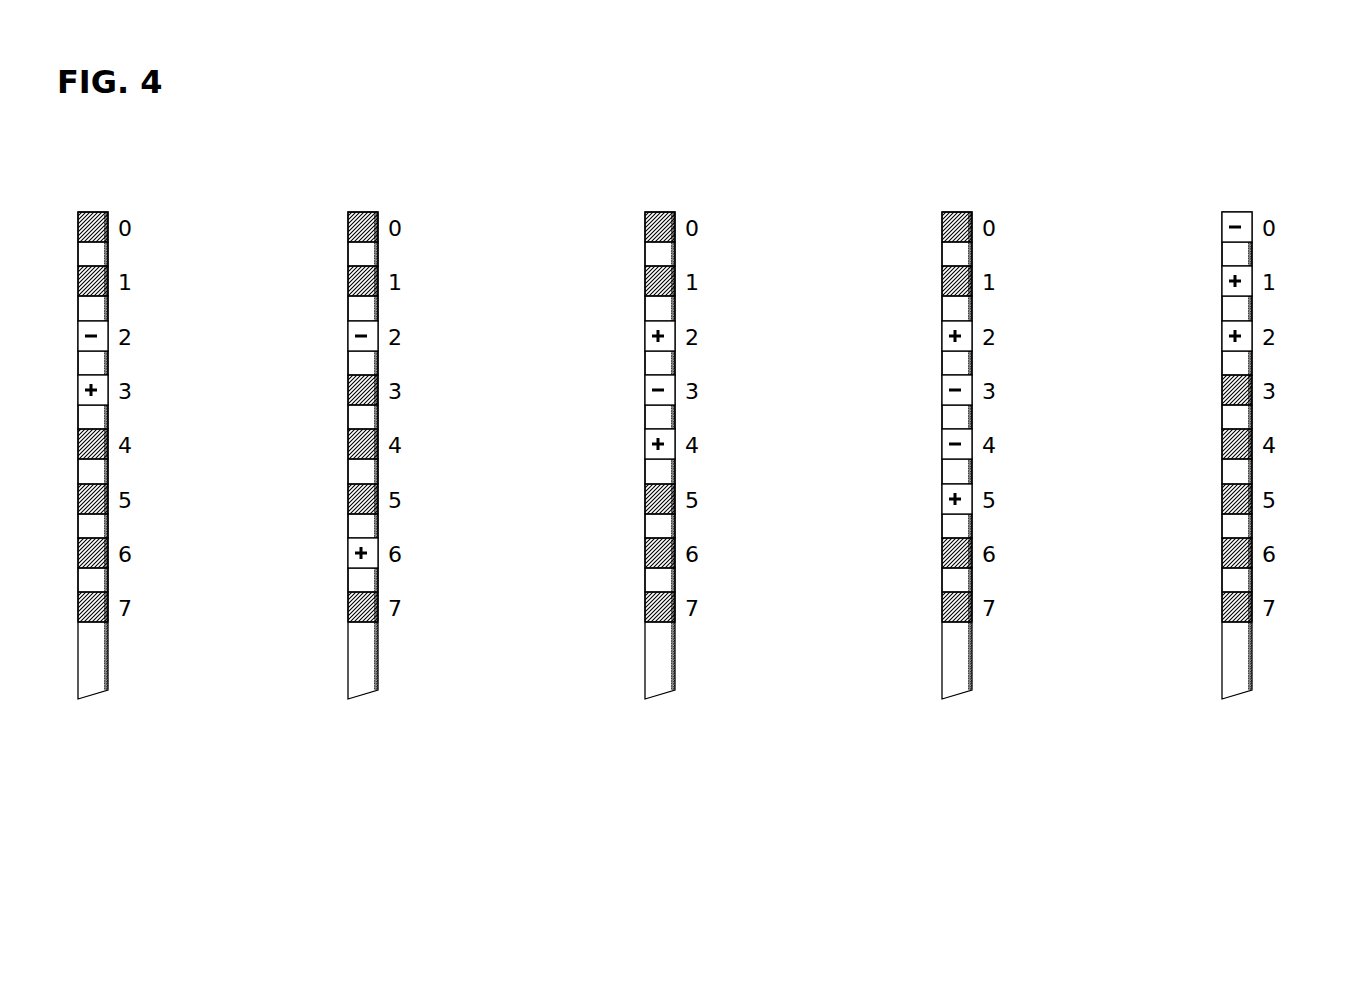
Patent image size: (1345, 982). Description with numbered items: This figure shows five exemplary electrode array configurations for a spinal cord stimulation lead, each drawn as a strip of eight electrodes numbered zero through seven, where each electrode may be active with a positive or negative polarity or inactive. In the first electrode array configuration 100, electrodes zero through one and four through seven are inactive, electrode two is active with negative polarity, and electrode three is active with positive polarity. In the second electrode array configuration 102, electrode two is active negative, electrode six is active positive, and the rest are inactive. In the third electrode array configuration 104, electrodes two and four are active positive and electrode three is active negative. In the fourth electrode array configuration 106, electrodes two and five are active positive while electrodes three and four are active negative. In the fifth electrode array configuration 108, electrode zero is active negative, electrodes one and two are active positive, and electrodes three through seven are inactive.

The first electrode array configuration 100 is at (176, 204).
The second electrode array configuration 102 is at (437, 204).
The third electrode array configuration 104 is at (733, 204).
The fourth electrode array configuration 106 is at (1035, 204).
The fifth electrode array configuration 108 is at (1295, 204).